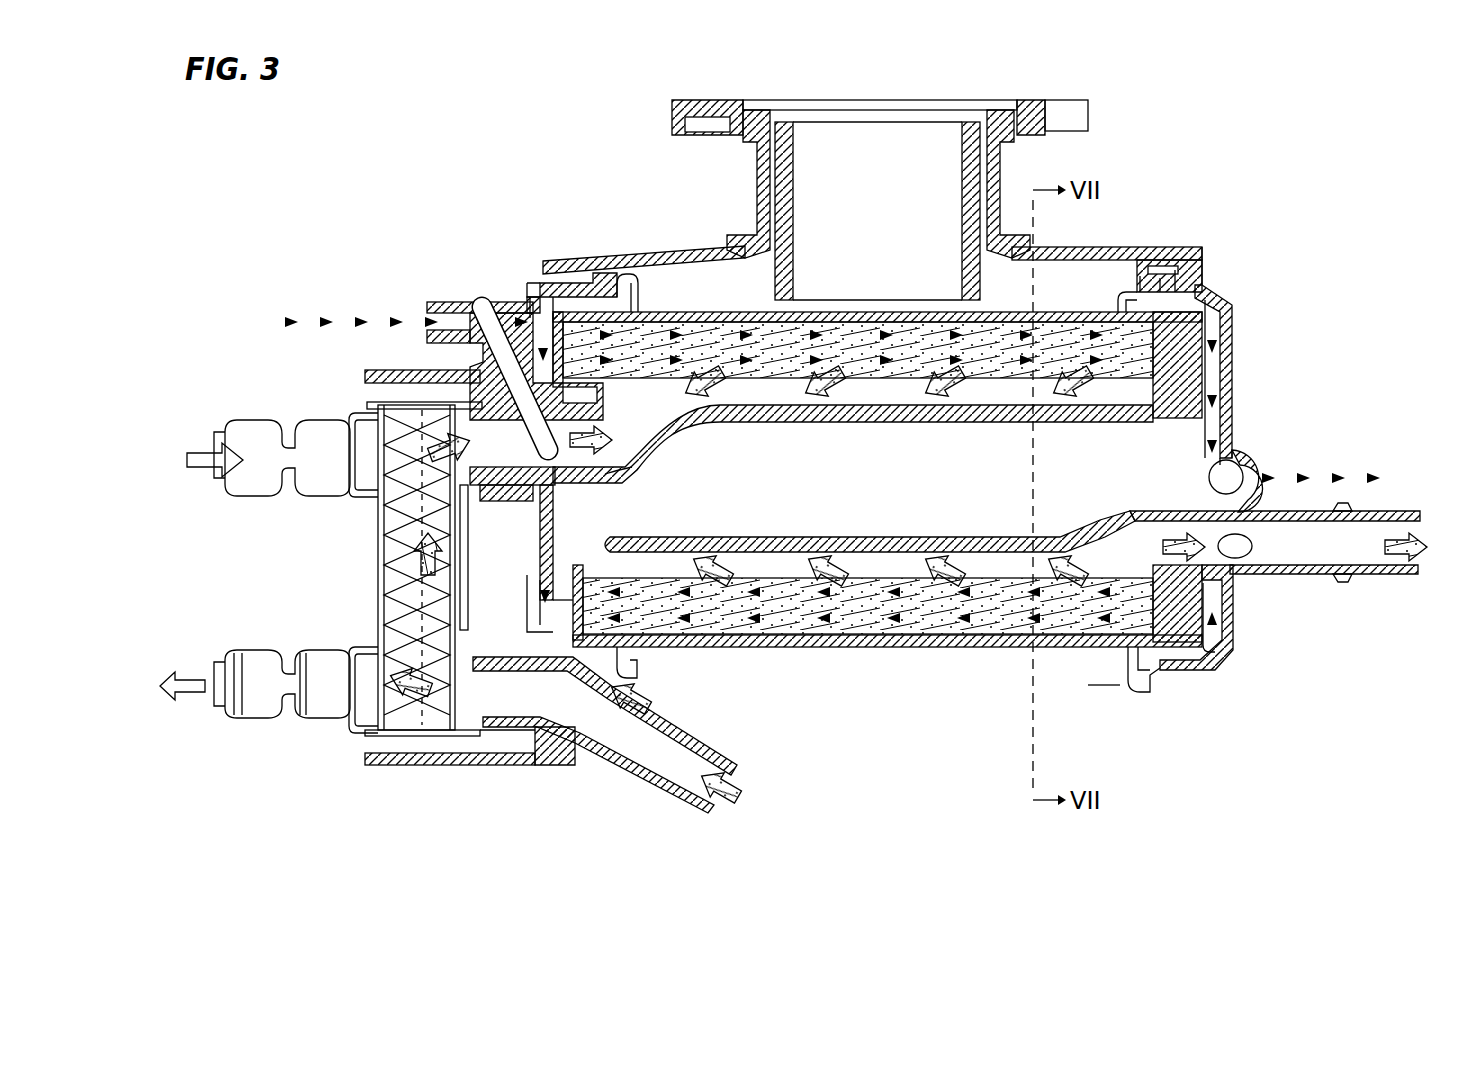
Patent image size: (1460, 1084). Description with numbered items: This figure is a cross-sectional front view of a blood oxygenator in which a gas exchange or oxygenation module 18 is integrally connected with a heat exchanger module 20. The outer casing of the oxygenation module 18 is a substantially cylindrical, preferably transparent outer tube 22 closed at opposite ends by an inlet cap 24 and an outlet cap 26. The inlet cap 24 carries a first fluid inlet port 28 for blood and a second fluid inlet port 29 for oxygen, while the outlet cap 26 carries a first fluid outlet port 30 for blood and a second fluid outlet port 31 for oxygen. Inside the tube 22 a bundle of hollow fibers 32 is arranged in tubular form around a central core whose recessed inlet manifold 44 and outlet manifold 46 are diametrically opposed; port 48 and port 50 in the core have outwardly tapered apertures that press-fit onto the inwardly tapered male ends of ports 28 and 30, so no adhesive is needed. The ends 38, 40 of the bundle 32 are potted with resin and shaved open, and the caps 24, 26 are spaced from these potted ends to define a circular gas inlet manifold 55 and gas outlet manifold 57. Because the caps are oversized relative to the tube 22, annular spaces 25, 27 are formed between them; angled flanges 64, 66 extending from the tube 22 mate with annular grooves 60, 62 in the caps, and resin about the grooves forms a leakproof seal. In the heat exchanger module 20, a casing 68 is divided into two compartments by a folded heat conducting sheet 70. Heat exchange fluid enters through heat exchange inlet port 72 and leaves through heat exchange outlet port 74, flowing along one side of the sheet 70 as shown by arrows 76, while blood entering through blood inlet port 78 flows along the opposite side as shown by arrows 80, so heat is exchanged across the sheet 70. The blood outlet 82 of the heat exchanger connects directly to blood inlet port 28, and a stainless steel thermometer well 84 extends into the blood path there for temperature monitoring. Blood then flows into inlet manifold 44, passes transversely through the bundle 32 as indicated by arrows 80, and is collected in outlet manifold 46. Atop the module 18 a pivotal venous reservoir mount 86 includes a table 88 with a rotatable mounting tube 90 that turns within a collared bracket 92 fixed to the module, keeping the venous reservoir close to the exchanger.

The oxygenation module 18 is at (939, 690).
The heat exchanger module 20 is at (447, 790).
The outer tube 22 is at (694, 648).
The inlet cap 24 is at (568, 532).
The annular space 25 is at (642, 655).
The outlet cap 26 is at (1240, 340).
The annular space 27 is at (1190, 662).
The first fluid inlet port 28 is at (470, 490).
The second fluid inlet port 29 is at (437, 302).
The first fluid outlet port 30 is at (1368, 577).
The second fluid outlet port 31 is at (1246, 462).
The bundle of hollow fibers 32 is at (826, 647).
The end of bundle 38 is at (540, 284).
The end of bundle 40 is at (1220, 662).
The inlet manifold 44 is at (738, 423).
The outlet manifold 46 is at (1050, 535).
The port 48 is at (630, 483).
The port 50 is at (1212, 530).
The gas inlet manifold 55 is at (535, 605).
The gas outlet manifold 57 is at (1235, 322).
The annular groove 60 is at (618, 272).
The annular groove 62 is at (1150, 262).
The angled flange 64 is at (642, 300).
The angled flange 66 is at (1118, 300).
The heat exchanger casing 68 is at (370, 740).
The folded heat conducting sheet 70 is at (378, 598).
The heat exchange inlet port 72 is at (283, 420).
The heat exchange outlet port 74 is at (256, 648).
The arrows 76 is at (232, 430).
The blood inlet port 78 is at (648, 778).
The arrows 80 is at (940, 386).
The blood outlet 82 is at (458, 378).
The thermometer well 84 is at (478, 302).
The pivotal venous reservoir mount 86 is at (1076, 92).
The table 88 is at (742, 96).
The mounting tube 90 is at (800, 180).
The collared bracket 92 is at (757, 186).